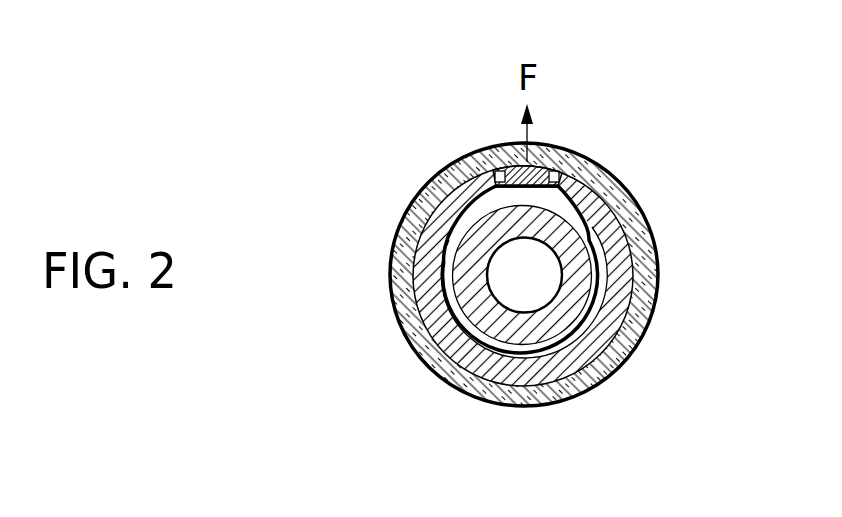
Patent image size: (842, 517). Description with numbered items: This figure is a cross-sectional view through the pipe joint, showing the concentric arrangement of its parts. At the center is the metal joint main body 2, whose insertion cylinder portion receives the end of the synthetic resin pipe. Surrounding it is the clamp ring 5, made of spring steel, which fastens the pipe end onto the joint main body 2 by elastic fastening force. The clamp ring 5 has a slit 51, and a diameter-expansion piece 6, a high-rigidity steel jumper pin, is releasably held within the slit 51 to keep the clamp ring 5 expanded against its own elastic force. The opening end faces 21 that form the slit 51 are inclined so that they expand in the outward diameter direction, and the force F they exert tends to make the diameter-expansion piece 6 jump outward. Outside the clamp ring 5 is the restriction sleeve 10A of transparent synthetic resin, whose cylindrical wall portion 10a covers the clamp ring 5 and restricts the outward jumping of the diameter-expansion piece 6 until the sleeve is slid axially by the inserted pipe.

The joint main body 2 is at (584, 262).
The clamp ring 5 is at (618, 297).
The diameter-expansion piece 6 is at (511, 163).
The restriction sleeve 10A is at (633, 344).
The cylindrical wall portion 10a is at (518, 408).
The opening end faces 21 is at (503, 162).
The slit 51 is at (537, 165).